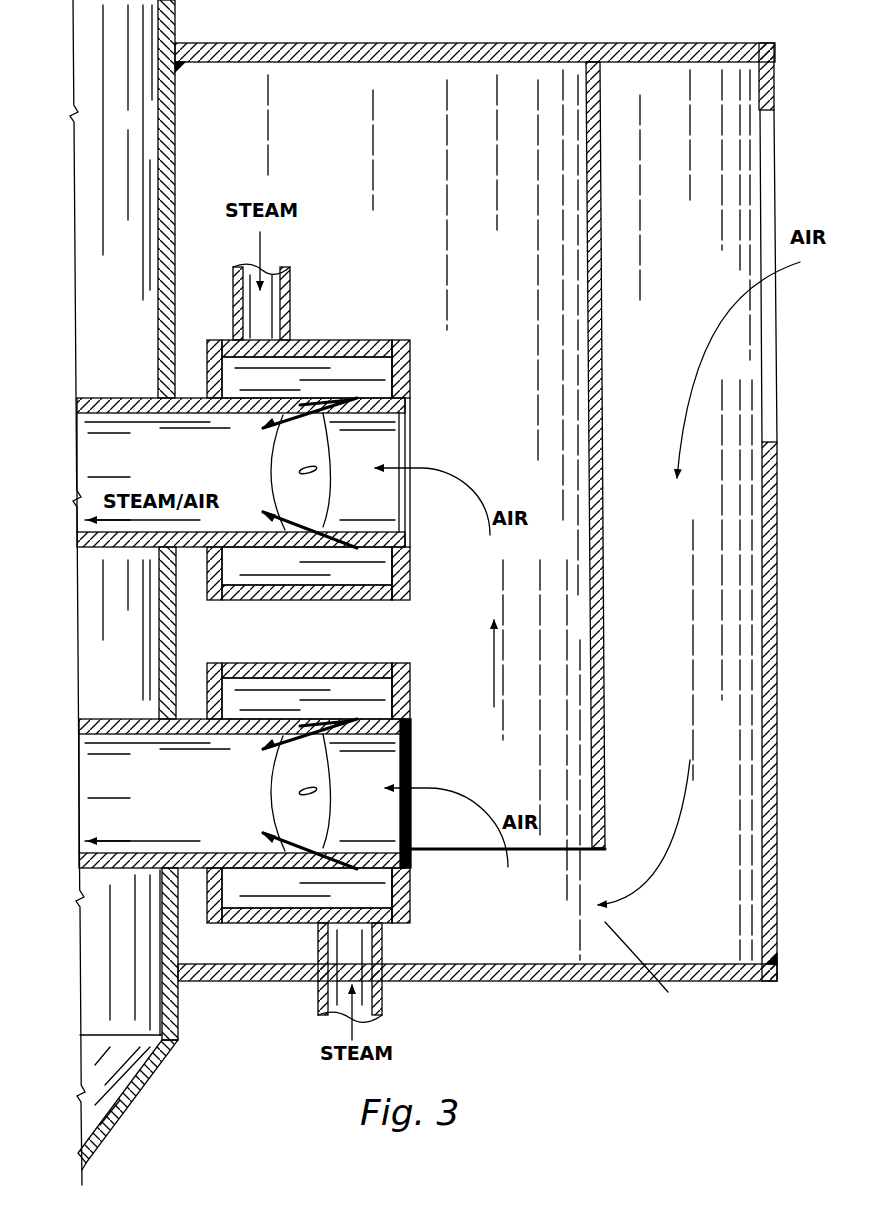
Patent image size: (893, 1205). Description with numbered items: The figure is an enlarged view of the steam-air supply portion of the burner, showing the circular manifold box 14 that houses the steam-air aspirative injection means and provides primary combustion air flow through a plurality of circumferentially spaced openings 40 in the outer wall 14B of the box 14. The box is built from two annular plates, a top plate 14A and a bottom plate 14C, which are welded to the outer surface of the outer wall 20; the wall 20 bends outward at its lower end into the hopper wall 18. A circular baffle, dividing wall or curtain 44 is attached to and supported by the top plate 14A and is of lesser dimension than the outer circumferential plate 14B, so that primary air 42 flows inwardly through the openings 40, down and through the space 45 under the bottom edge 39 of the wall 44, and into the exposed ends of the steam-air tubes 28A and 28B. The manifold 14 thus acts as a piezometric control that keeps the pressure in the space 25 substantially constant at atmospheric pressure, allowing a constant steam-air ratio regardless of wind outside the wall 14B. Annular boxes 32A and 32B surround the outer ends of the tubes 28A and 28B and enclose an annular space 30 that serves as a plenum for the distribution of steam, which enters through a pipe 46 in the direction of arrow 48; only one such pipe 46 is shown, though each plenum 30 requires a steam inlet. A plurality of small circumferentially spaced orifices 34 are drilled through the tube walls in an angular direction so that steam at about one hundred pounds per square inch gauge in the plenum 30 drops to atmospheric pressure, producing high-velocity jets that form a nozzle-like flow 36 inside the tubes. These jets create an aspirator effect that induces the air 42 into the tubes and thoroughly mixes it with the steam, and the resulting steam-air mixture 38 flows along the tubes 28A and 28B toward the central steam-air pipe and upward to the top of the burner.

The circular manifold box 14 is at (504, 508).
The top annular plate 14A is at (526, 44).
The outer wall 14B is at (777, 610).
The bottom annular plate 14C is at (414, 981).
The hopper wall 18 is at (125, 1120).
The outer wall 20 is at (182, 27).
The space 25 is at (509, 404).
The steam-air tube 28A is at (100, 398).
The steam-air tube 28B is at (100, 719).
The annular space 30 is at (408, 362).
The annular box 32A is at (345, 340).
The annular box 32B is at (340, 663).
The orifices 34 is at (312, 473).
The nozzle 36 is at (256, 633).
The steam/air flow 38 is at (120, 477).
The bottom edge 39 is at (556, 850).
The openings 40 is at (776, 170).
The primary air 42 is at (462, 490).
The circular baffle 44 is at (590, 275).
The space 45 is at (645, 969).
The steam pipe 46 is at (291, 298).
The steam flow arrow 48 is at (260, 258).